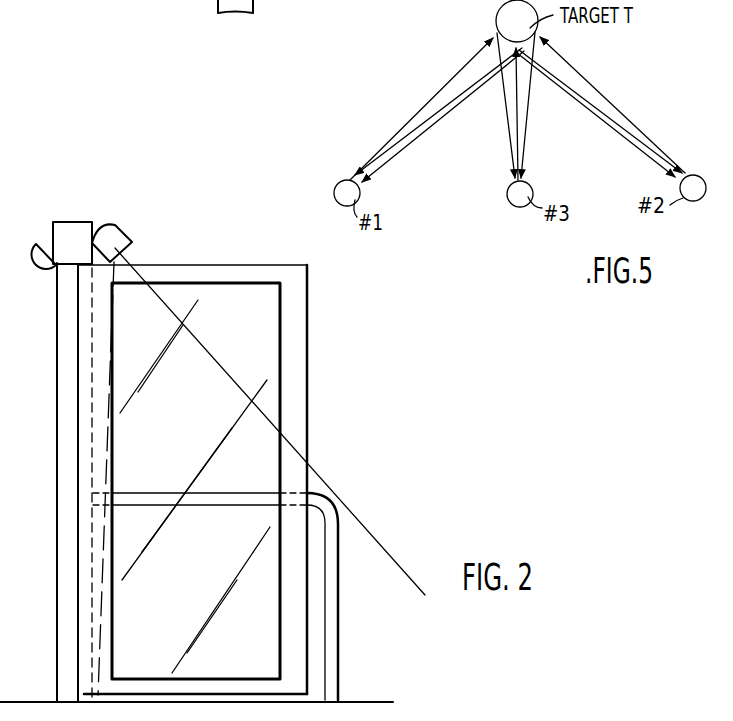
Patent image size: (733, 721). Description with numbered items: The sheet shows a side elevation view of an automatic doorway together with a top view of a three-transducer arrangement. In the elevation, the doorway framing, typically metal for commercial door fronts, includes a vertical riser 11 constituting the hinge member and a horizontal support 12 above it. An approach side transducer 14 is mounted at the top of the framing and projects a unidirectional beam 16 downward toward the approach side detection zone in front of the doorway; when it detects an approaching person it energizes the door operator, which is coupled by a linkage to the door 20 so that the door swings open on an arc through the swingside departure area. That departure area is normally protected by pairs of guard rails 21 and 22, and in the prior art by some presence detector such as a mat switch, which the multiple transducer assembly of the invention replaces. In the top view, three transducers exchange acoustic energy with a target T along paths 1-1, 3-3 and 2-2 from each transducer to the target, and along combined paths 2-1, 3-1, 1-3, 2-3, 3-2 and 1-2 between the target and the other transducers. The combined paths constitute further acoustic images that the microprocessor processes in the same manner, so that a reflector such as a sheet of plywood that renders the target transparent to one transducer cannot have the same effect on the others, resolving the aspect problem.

In FIG. 2, the vertical riser 11 is at (65, 490).
In FIG. 2, the horizontal support 12 is at (65, 228).
In FIG. 2, the approach side transducer 14 is at (43, 262).
In FIG. 2, the unidirectional beam 16 is at (243, 457).
In FIG. 2, the door 20 is at (213, 277).
In FIG. 2, the guard rail 21 is at (340, 610).
In FIG. 2, the guard rail 22 is at (278, 6).
In FIG. 5, the acoustic path 1-1 is at (442, 87).
In FIG. 5, the acoustic path 2-1 is at (432, 115).
In FIG. 5, the acoustic path 3-1 is at (413, 140).
In FIG. 5, the acoustic path 1-3 is at (503, 90).
In FIG. 5, the acoustic path 3-3 is at (513, 132).
In FIG. 5, the acoustic path 2-3 is at (528, 120).
In FIG. 5, the acoustic path 2-2 is at (635, 120).
In FIG. 5, the acoustic path 3-2 is at (612, 127).
In FIG. 5, the acoustic path 1-2 is at (625, 137).